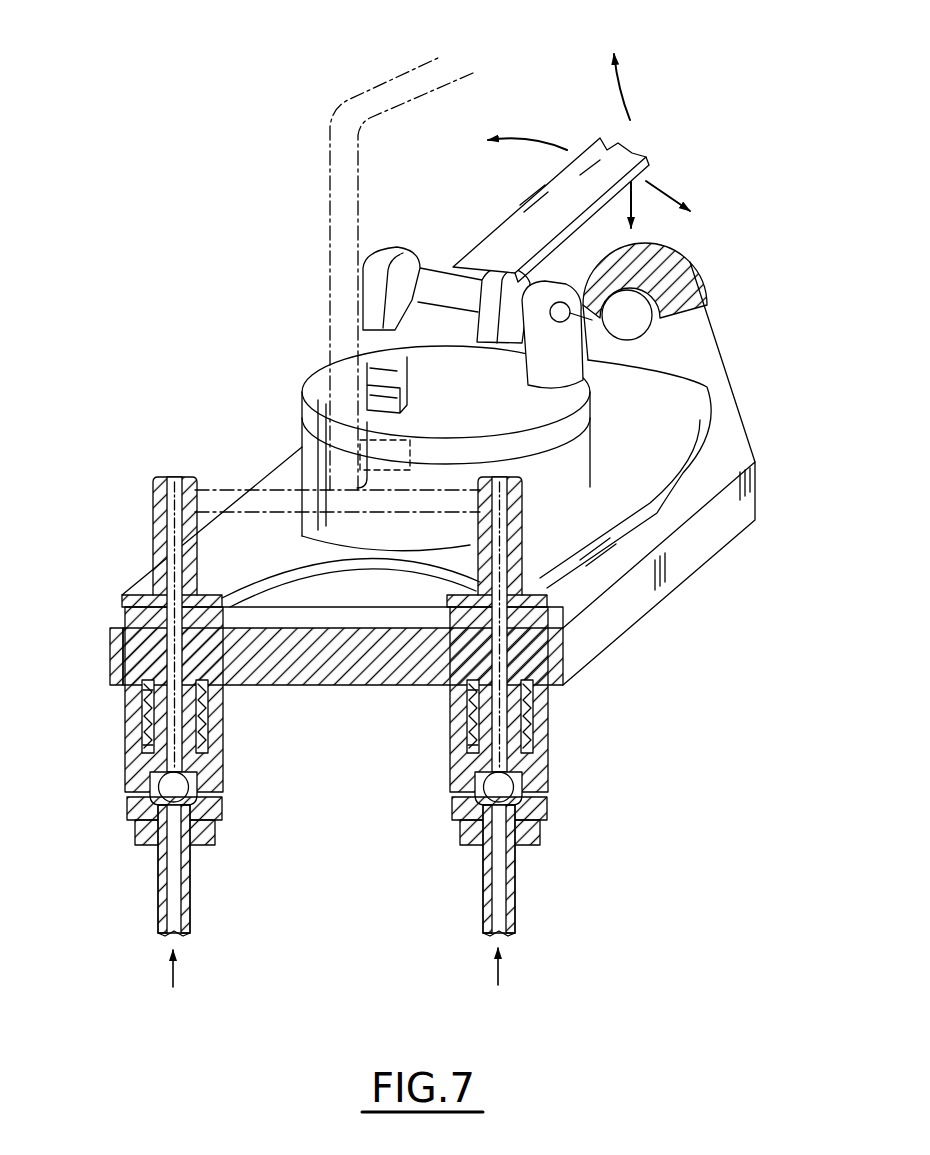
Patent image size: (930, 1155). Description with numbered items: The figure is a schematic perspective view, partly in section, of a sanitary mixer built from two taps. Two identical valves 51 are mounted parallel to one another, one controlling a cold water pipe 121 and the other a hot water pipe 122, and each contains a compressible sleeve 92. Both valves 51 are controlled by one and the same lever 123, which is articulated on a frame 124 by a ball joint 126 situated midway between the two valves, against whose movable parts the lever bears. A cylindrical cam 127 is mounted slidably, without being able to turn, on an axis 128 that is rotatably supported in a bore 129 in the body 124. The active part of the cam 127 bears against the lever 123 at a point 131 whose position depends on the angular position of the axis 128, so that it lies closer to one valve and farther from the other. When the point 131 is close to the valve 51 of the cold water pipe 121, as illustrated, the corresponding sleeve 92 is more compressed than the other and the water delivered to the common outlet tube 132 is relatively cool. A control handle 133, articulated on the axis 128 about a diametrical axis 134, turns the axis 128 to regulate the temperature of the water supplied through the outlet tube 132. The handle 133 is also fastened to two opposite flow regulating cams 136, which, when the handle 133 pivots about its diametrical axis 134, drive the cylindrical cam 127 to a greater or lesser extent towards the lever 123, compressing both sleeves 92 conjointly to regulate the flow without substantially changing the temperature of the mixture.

The valve 51 is at (351, 732).
The sleeve 92 is at (145, 745).
The cold water pipe 121 is at (190, 900).
The hot water pipe 122 is at (516, 902).
The lever 123 is at (662, 518).
The frame 124 is at (567, 648).
The ball joint 126 is at (698, 272).
The cylindrical cam 127 is at (608, 434).
The axis 128 is at (433, 381).
The bore 129 is at (400, 590).
The point 131 is at (297, 580).
The common outlet tube 132 is at (330, 166).
The control handle 133 is at (588, 148).
The diametrical axis 134 is at (732, 320).
The flow regulating cams 136 is at (364, 282).